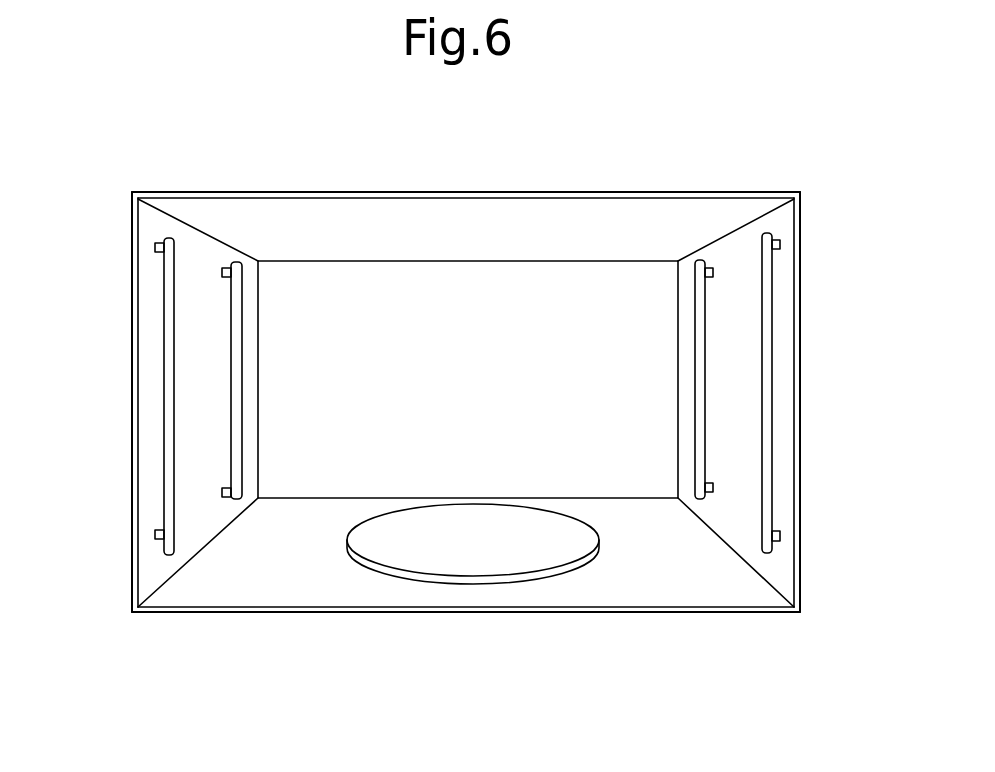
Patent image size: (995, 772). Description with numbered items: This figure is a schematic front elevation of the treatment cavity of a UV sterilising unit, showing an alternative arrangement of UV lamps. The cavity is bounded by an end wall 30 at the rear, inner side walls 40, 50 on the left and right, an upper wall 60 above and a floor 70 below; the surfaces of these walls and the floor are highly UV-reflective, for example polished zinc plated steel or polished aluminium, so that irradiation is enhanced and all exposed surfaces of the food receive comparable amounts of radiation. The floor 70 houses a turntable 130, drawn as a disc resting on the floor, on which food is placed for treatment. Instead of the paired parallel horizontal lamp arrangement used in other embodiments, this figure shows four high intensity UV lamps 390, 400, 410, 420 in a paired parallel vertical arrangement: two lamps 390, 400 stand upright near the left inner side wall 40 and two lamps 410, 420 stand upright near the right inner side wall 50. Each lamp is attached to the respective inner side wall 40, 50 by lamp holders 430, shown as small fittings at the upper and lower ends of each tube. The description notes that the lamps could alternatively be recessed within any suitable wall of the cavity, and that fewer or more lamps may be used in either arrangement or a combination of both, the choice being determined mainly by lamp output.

The end wall 30 is at (622, 350).
The inner side wall 40 is at (190, 462).
The inner side wall 50 is at (728, 448).
The upper wall 60 is at (657, 218).
The floor 70 is at (666, 577).
The turntable 130 is at (490, 547).
The lamp 390 is at (166, 400).
The lamp 400 is at (240, 392).
The lamp 410 is at (698, 426).
The lamp 420 is at (768, 492).
The lamp holder 430 is at (225, 268).